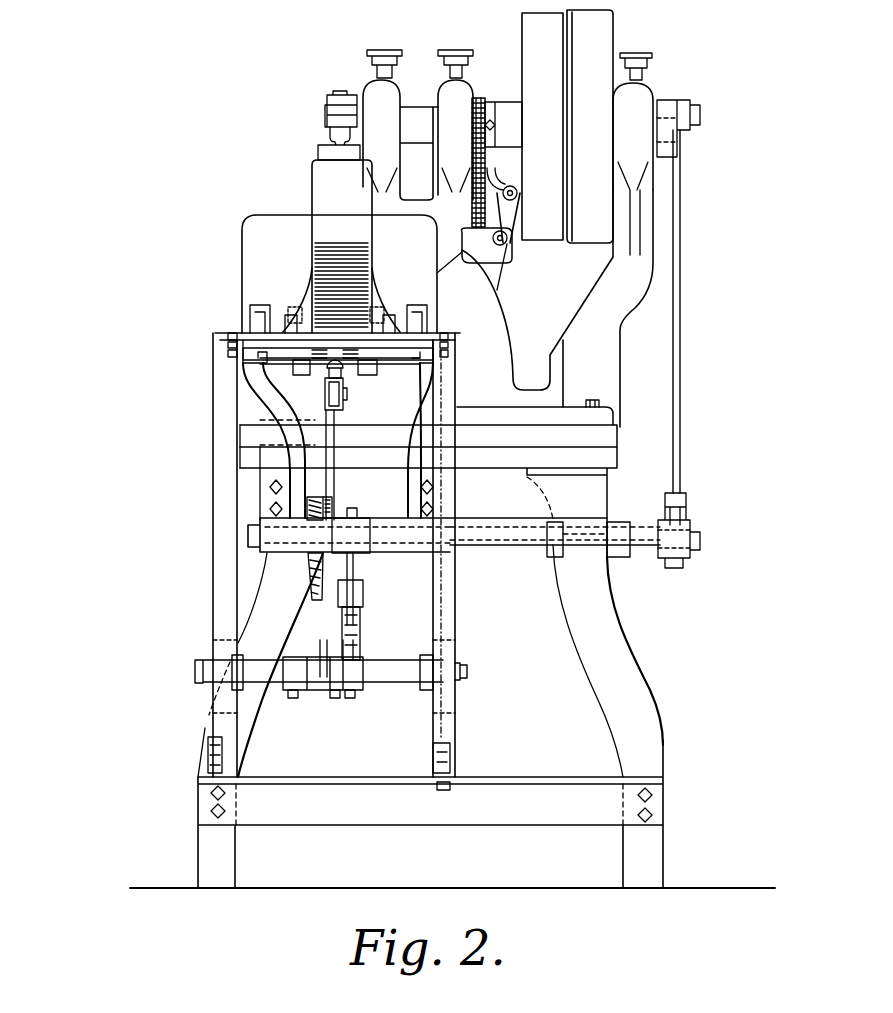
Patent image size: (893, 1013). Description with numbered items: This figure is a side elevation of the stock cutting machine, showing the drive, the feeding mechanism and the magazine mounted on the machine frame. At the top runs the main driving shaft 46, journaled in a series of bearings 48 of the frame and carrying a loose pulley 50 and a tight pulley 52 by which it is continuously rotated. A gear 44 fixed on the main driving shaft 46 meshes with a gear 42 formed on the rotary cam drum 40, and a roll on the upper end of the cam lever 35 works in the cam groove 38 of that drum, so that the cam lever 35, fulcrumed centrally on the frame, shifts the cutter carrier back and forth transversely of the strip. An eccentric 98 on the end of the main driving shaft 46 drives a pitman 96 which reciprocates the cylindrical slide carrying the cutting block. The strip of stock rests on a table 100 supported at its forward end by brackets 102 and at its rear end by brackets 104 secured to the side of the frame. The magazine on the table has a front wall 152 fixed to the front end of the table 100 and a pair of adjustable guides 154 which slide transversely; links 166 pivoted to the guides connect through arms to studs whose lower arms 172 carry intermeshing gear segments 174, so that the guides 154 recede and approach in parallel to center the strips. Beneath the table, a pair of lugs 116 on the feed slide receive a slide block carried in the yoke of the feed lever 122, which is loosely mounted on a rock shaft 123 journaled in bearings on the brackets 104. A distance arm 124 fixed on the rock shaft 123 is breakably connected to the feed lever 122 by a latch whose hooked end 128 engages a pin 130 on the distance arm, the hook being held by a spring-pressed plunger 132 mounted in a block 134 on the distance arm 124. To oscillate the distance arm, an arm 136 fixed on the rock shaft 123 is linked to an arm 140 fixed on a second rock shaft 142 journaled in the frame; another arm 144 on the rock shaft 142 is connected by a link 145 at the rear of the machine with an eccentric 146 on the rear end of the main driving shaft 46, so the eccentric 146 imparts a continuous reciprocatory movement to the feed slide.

The cam lever 35 is at (498, 272).
The cam groove 38 is at (495, 176).
The rotary cam drum 40 is at (517, 188).
The gear 42 is at (472, 198).
The gear 44 is at (479, 100).
The main driving shaft 46 is at (507, 112).
The bearings 48 is at (442, 106).
The loose pulley 50 is at (542, 126).
The tight pulley 52 is at (590, 126).
The pitman 96 is at (328, 142).
The eccentric 98 is at (325, 113).
The table 100 is at (437, 332).
The brackets 102 is at (253, 418).
The brackets 104 is at (213, 612).
The lugs 116 is at (343, 400).
The feed lever 122 is at (335, 437).
The rock shaft 123 is at (400, 680).
The distance arm 124 is at (350, 582).
The hooked end 128 is at (330, 503).
The pin 130 is at (310, 500).
The spring-pressed plunger 132 is at (265, 540).
The block 134 is at (310, 590).
The arm 136 is at (360, 620).
The arm 140 is at (356, 566).
The rock shaft 142 is at (518, 540).
The arm 144 is at (686, 522).
The link 145 is at (681, 300).
The eccentric 146 is at (665, 103).
The front wall 152 is at (243, 255).
The adjustable guides 154 is at (341, 274).
The links 166 is at (392, 312).
The arms 172 is at (357, 355).
The gear segments 174 is at (330, 370).